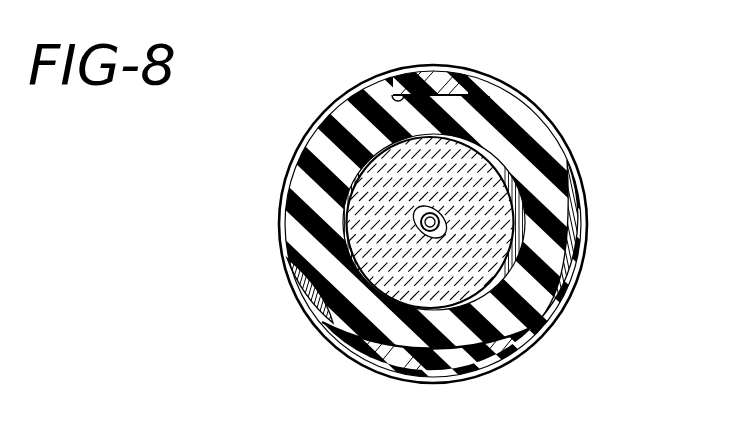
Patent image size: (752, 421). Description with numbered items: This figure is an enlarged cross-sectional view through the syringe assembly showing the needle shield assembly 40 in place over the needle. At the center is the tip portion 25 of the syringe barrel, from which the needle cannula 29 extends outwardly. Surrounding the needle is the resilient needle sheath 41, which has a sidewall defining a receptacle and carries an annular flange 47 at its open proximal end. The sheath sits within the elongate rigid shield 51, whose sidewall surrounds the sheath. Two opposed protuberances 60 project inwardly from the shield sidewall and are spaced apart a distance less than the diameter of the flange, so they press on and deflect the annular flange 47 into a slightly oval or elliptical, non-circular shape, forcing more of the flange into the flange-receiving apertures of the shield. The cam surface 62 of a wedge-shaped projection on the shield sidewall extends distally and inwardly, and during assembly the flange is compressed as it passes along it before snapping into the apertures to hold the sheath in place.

The tip portion 25 is at (507, 217).
The needle cannula 29 is at (420, 216).
The needle shield assembly 40 is at (503, 95).
The resilient needle sheath 41 is at (288, 247).
The annular flange 47 is at (303, 184).
The rigid shield 51 is at (563, 313).
The protuberances 60 is at (392, 92).
The cam surface 62 is at (428, 353).